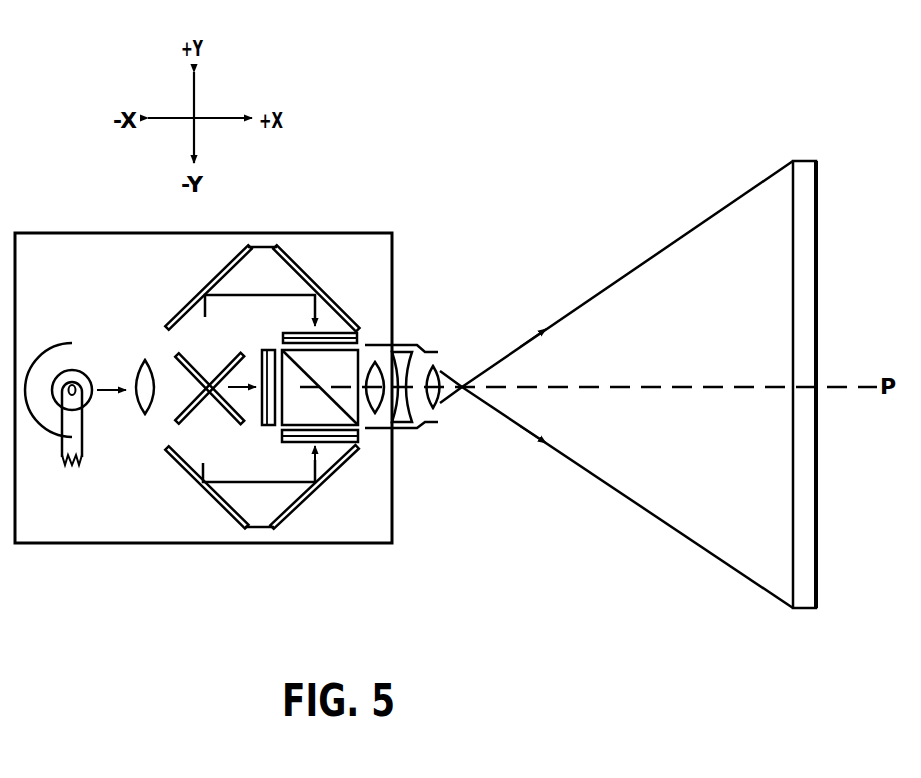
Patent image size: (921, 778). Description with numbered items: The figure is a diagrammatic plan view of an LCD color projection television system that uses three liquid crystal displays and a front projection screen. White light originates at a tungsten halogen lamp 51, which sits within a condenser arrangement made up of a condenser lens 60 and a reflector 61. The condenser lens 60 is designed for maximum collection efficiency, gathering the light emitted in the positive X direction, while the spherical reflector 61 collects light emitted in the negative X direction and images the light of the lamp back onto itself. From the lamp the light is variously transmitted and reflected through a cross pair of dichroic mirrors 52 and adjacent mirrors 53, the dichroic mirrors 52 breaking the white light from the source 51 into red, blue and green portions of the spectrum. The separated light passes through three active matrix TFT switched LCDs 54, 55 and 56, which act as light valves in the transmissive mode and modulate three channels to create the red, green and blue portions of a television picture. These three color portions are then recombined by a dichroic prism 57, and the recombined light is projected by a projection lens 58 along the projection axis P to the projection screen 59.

The tungsten halogen lamp 51 is at (95, 362).
The cross pair of dichroic mirrors 52 is at (229, 414).
The adjacent mirrors 53 is at (213, 277).
The active matrix TFT switched LCD 54 is at (267, 348).
The active matrix TFT switched LCD 55 is at (302, 330).
The active matrix TFT switched LCD 56 is at (301, 445).
The dichroic prism 57 is at (283, 415).
The projection lens 58 is at (412, 428).
The projection screen 59 is at (793, 443).
The condenser lens 60 is at (141, 410).
The reflector 61 is at (47, 347).